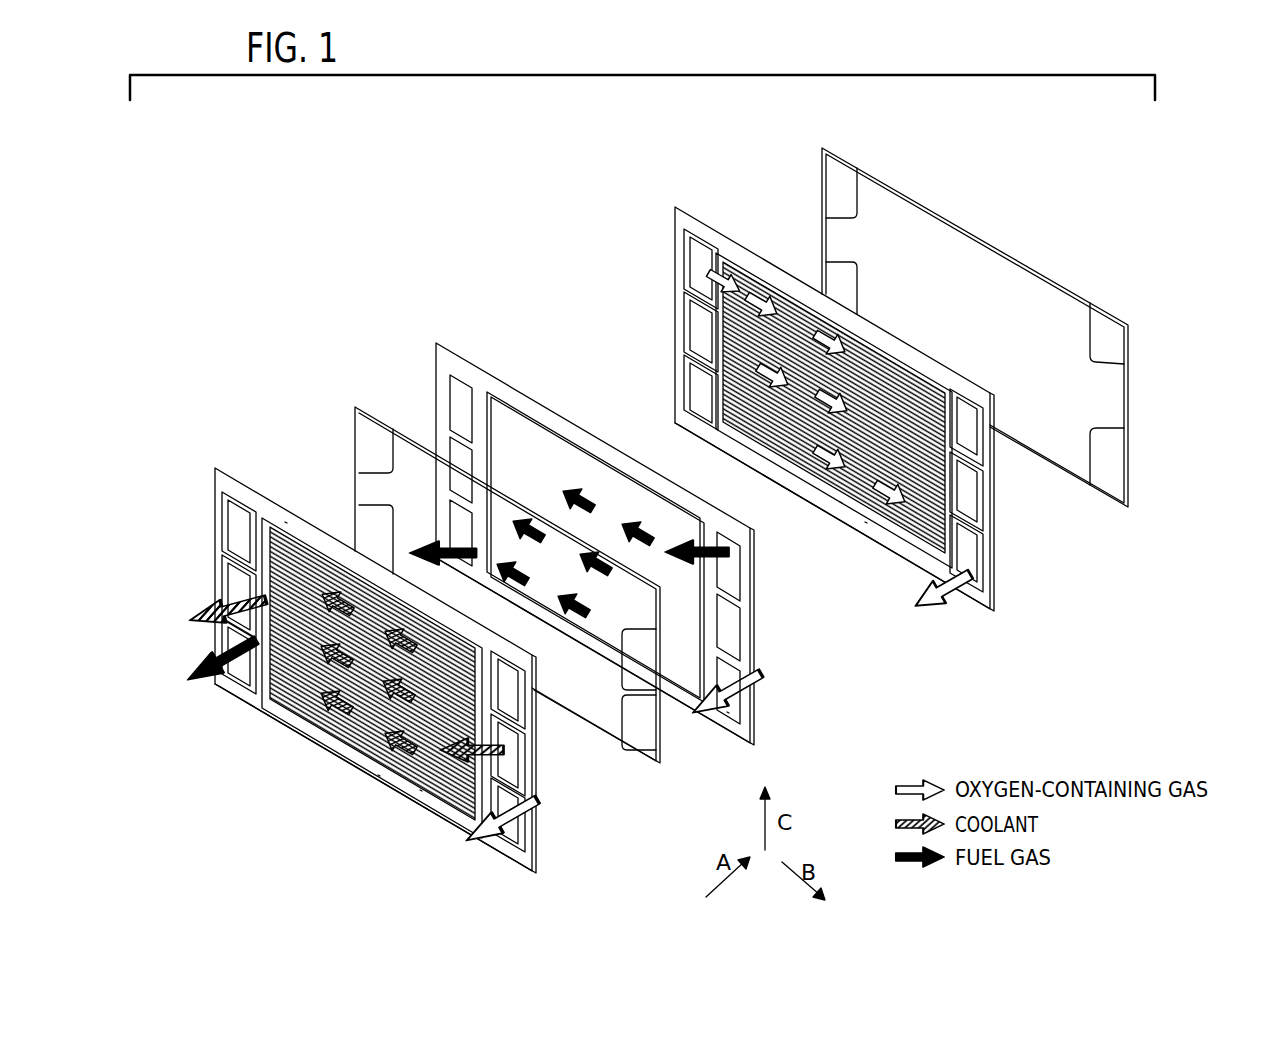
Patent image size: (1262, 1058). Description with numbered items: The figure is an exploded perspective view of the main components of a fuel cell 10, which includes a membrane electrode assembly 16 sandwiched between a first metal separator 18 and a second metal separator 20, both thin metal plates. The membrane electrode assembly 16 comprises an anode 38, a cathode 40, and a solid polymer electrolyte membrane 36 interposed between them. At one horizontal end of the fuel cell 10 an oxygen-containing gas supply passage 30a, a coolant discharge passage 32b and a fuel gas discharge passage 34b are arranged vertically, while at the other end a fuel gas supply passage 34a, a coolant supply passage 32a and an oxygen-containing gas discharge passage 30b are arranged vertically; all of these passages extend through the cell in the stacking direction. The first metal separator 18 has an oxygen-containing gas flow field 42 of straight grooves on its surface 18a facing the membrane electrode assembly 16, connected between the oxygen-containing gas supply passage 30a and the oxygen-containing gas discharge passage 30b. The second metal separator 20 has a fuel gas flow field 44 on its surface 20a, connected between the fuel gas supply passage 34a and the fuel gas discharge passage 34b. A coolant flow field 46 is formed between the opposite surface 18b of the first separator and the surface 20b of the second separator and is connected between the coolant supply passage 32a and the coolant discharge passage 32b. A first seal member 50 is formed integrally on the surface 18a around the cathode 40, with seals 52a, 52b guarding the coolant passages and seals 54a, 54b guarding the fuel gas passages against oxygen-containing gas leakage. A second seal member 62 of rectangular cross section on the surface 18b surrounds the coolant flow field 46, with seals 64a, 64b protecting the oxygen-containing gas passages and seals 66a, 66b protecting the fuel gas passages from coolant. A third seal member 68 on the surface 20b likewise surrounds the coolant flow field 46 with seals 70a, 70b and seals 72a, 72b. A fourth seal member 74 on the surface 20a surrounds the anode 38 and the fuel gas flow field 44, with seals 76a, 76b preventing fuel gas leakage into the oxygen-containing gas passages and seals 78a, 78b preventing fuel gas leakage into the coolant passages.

The fuel cell 10 is at (541, 247).
The membrane electrode assembly 16 is at (436, 343).
The first metal separator 18 is at (676, 207).
The surface of the first metal separator 18a is at (840, 502).
The surface of the first metal separator 18b is at (865, 522).
The second metal separator 20 is at (215, 468).
The surface of the second metal separator 20a is at (420, 790).
The surface of the second metal separator 20b is at (378, 775).
The oxygen-containing gas supply passage 30a is at (458, 390).
The oxygen-containing gas discharge passage 30b is at (745, 699).
The coolant supply passage 32a is at (745, 632).
The coolant discharge passage 32b is at (458, 455).
The fuel gas supply passage 34a is at (745, 560).
The fuel gas discharge passage 34b is at (466, 545).
The solid polymer electrolyte membrane 36 is at (727, 712).
The anode 38 is at (527, 425).
The cathode 40 is at (633, 490).
The oxygen-containing gas flow field 42 is at (907, 375).
The fuel gas flow field 44 is at (447, 632).
The coolant flow field 46 is at (285, 522).
The first seal member 50 is at (778, 275).
The seal 52a is at (985, 500).
The seal 52b is at (683, 321).
The seal 54a is at (985, 426).
The seal 54b is at (683, 383).
The second seal member 62 is at (821, 148).
The seal 64a is at (840, 162).
The seal 64b is at (1108, 506).
The seal 66a is at (1108, 318).
The seal 66b is at (848, 282).
The third seal member 68 is at (268, 718).
The seal 70a is at (222, 500).
The seal 70b is at (505, 842).
The seal 72a is at (505, 655).
The seal 72b is at (232, 688).
The fourth seal member 74 is at (356, 404).
The seal 76a is at (360, 450).
The seal 76b is at (657, 766).
The seal 78a is at (678, 648).
The seal 78b is at (357, 505).